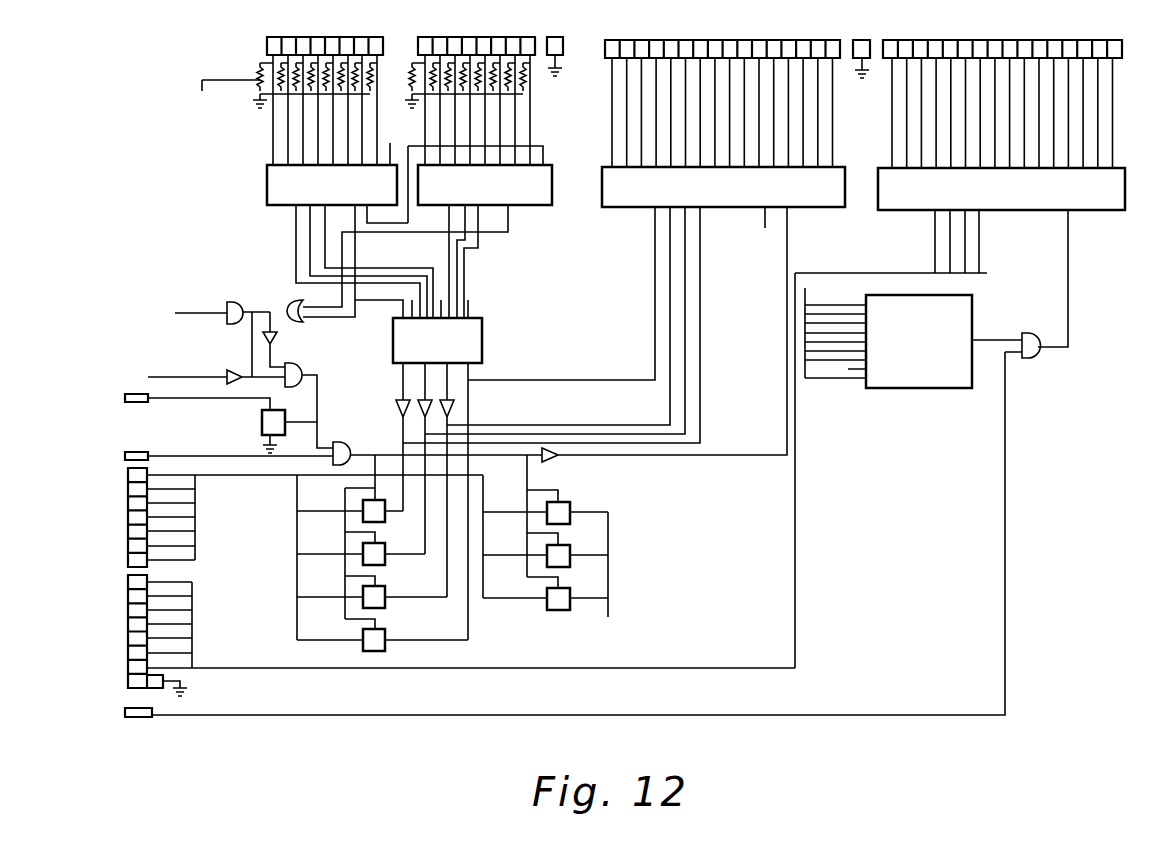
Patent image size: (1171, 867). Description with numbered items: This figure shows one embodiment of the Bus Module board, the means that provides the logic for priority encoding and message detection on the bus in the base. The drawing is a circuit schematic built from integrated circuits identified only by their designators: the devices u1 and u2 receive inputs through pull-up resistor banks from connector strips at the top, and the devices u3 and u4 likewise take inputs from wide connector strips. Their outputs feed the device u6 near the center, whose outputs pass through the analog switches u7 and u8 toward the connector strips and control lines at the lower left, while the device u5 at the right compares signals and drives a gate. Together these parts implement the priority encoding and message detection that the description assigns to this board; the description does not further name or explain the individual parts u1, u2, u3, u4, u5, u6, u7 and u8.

The priority encoder 4532 u1 is at (332, 185).
The priority encoder 4532 u2 is at (485, 185).
The 4-to-16 decoder 4514 u3 is at (723, 187).
The 4-to-16 decoder 4514 u4 is at (1001, 189).
The magnitude comparator 4063 u5 is at (919, 341).
The quad multiplexer 40257 u6 is at (437, 340).
The quad bilateral switch 4066 u7 is at (414, 582).
The quad bilateral switch 4066 u8 is at (396, 523).